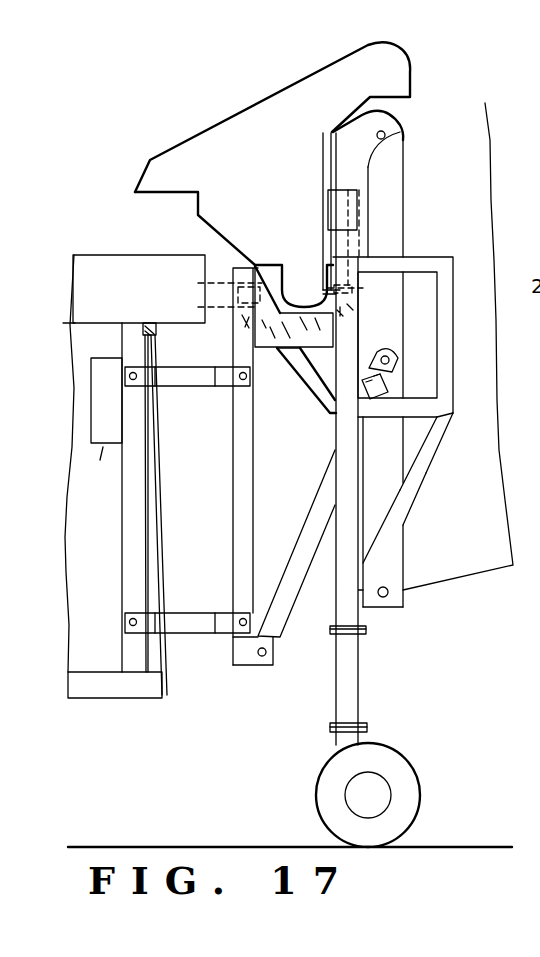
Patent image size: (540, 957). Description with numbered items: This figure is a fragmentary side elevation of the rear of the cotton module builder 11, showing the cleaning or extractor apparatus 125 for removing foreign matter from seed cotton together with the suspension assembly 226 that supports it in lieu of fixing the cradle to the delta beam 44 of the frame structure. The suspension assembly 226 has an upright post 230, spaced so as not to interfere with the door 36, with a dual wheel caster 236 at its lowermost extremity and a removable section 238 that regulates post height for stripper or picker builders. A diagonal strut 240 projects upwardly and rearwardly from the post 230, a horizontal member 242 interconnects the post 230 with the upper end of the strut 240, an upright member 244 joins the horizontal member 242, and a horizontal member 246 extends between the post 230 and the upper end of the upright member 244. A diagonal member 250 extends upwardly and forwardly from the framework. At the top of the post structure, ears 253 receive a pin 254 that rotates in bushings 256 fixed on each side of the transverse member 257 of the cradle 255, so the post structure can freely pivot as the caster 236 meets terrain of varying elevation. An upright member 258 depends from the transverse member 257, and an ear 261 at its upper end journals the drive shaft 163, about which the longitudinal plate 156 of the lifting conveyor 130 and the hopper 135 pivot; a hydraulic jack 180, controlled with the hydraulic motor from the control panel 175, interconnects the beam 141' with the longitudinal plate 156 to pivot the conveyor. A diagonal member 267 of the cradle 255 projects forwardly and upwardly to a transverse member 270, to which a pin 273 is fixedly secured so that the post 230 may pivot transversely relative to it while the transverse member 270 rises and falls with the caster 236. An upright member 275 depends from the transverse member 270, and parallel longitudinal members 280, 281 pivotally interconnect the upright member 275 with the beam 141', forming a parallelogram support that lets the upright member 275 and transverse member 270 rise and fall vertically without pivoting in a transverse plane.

The cleaning or extractor apparatus 125 is at (204, 117).
The cotton module builder 11 is at (112, 242).
The delta beam 44 is at (208, 252).
The control panel 175 is at (98, 448).
The beam 141' is at (115, 529).
The door 36 is at (172, 686).
The parallel longitudinal member 280 is at (201, 382).
The parallel longitudinal member 281 is at (203, 620).
The upright member 275 is at (234, 438).
The hydraulic jack 180 is at (302, 531).
The pin 273 is at (260, 284).
The transverse member 270 is at (255, 301).
The diagonal member 267 is at (234, 331).
The transverse member 257 is at (340, 212).
The bushing 256 is at (330, 233).
The ear 253 is at (330, 290).
The pin 254 is at (338, 318).
The diagonal member 250 is at (314, 398).
The cradle 255 is at (270, 355).
The upright post 230 is at (348, 468).
The removable section 238 is at (351, 711).
The dual wheel caster 236 is at (396, 765).
The suspension assembly 226 is at (290, 783).
The upright member 258 is at (362, 182).
The ear 261 is at (392, 121).
The drive shaft 163 is at (386, 136).
The horizontal member 246 is at (436, 258).
The upright member 244 is at (449, 401).
The horizontal member 242 is at (416, 410).
The diagonal strut 240 is at (418, 491).
The longitudinal plate 156 is at (398, 544).
The lifting conveyor 130 is at (410, 608).
The hopper 135 is at (478, 586).